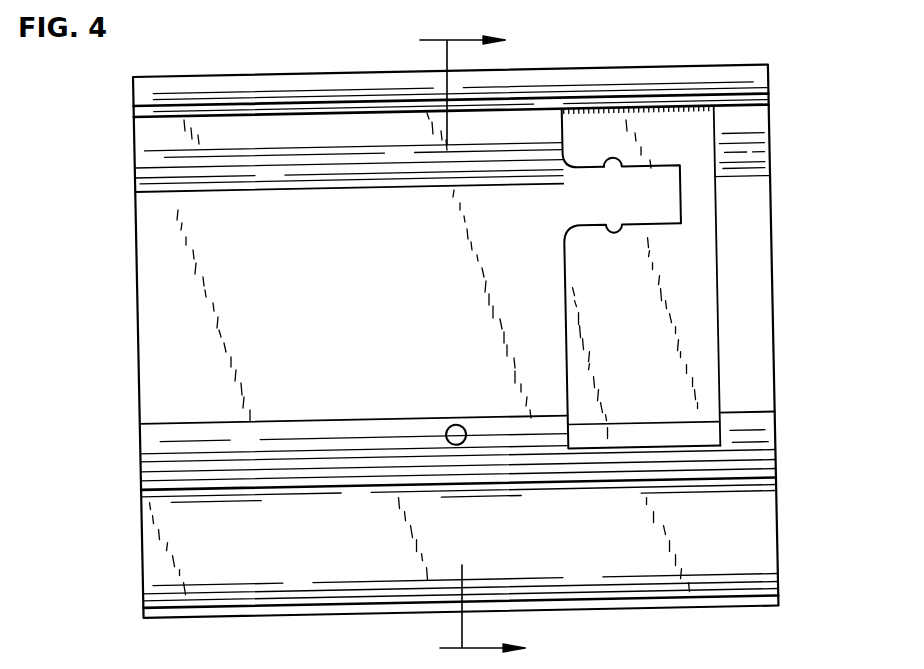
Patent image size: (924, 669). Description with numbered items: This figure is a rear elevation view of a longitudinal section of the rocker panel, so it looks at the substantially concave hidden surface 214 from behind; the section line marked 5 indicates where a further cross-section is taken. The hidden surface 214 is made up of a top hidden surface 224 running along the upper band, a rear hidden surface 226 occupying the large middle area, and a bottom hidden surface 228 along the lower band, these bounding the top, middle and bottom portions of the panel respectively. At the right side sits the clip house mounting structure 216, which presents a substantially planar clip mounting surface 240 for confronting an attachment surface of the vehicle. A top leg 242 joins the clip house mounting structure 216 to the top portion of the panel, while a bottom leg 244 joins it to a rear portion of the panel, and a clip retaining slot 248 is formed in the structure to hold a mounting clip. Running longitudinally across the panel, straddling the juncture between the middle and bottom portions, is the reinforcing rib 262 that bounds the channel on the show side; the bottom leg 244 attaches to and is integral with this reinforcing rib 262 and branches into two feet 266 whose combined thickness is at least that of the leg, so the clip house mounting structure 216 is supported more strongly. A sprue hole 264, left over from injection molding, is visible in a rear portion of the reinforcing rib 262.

The section line 5- 5 is at (461, 347).
The hidden surface 214 is at (150, 263).
The clip house mounting structure 216 is at (690, 250).
The top hidden surface 224 is at (150, 133).
The rear hidden surface 226 is at (160, 330).
The bottom hidden surface 228 is at (160, 552).
The clip mounting surface 240 is at (700, 346).
The top leg 242 is at (702, 122).
The bottom leg 244 is at (602, 435).
The clip retaining slot 248 is at (643, 167).
The reinforcing rib 262 is at (158, 453).
The sprue hole 264 is at (443, 428).
The feet 266 is at (478, 457).